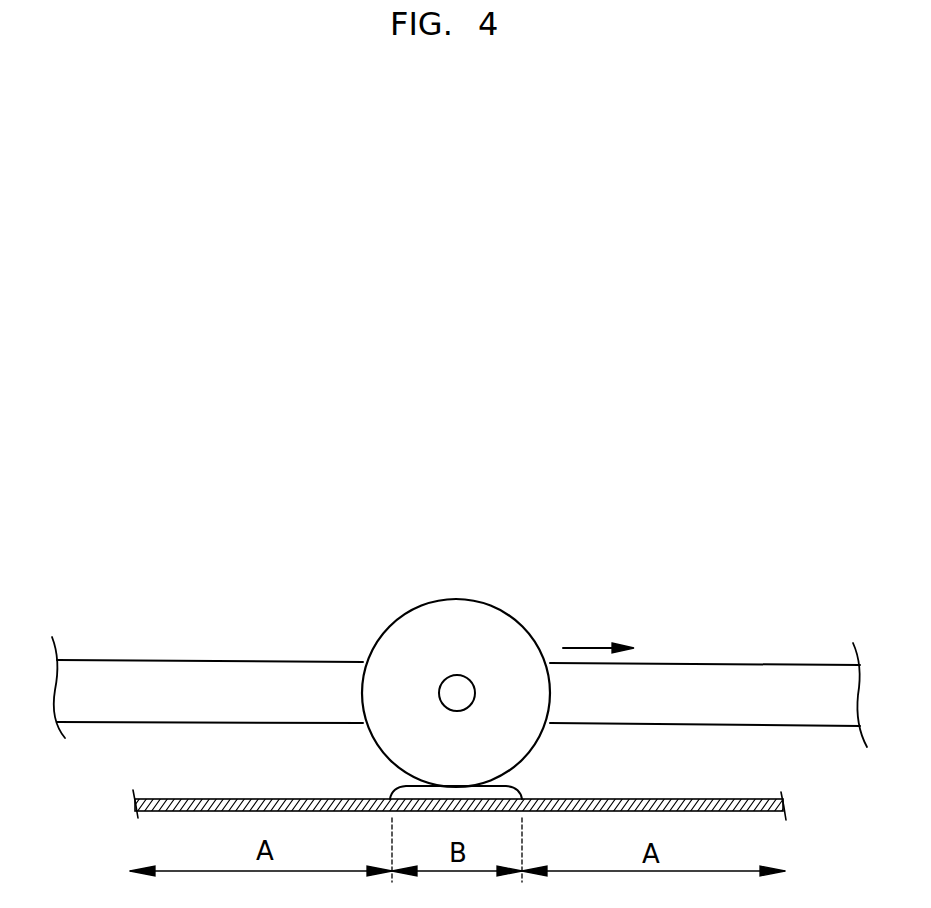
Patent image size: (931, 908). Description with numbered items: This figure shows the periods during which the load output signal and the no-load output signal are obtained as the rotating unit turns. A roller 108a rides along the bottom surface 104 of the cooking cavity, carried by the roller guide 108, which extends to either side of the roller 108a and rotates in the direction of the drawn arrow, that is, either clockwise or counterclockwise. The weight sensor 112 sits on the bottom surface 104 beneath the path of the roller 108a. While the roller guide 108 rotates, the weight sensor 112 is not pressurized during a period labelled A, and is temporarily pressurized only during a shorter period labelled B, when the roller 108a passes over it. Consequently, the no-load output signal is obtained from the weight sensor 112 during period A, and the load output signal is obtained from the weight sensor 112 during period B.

The bottom surface 104 is at (150, 808).
The roller guide 108 is at (262, 677).
The roller 108a is at (408, 642).
The weight sensor 112 is at (507, 792).